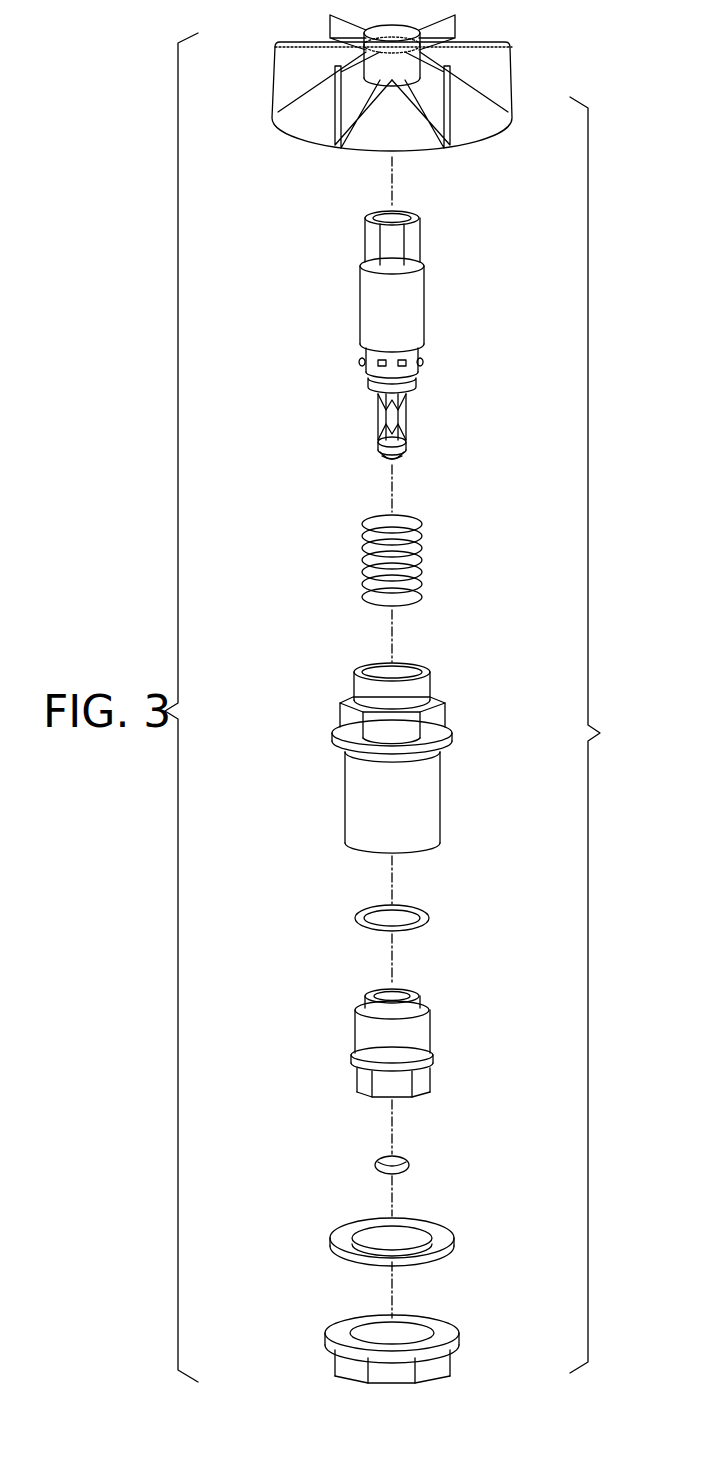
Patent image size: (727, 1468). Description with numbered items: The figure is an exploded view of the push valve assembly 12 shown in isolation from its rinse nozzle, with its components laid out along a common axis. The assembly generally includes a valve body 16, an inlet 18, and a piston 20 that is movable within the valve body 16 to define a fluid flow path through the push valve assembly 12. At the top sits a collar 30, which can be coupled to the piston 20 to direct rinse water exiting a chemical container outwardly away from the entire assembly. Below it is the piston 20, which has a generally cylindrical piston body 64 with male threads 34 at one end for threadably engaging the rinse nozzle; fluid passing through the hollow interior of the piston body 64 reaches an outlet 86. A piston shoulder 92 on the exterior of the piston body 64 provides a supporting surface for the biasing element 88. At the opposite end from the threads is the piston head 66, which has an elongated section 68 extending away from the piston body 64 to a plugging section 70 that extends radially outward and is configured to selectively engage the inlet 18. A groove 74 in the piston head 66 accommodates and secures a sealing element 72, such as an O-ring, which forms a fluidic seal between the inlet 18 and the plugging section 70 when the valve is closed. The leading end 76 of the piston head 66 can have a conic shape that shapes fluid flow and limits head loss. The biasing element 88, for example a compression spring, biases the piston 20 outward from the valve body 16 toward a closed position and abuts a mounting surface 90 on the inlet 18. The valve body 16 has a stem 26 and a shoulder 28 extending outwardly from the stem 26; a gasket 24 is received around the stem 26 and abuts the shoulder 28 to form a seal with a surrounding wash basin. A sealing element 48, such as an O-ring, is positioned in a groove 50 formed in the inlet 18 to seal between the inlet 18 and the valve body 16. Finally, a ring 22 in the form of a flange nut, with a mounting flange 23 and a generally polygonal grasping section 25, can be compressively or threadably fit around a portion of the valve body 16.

The push valve assembly 12 is at (399, 703).
The collar 30 is at (300, 123).
The outlet 86 is at (381, 215).
The male threads 34 is at (422, 243).
The piston 20 is at (404, 338).
The piston body 64 is at (425, 318).
The piston shoulder 92 is at (418, 360).
The elongated section 68 is at (383, 410).
The plugging section 70 is at (382, 448).
The groove 74 is at (402, 450).
The leading end 76 is at (388, 458).
The piston head 66 is at (405, 454).
The biasing element 88 is at (368, 560).
The shoulder 28 is at (452, 735).
The valve body 16 is at (398, 758).
The stem 26 is at (440, 790).
The sealing element 48 is at (363, 922).
The mounting surface 90 is at (420, 1002).
The groove 50 is at (357, 1058).
The inlet 18 is at (395, 1038).
The sealing element 72 is at (380, 1168).
The gasket 24 is at (340, 1252).
The mounting flange 23 is at (445, 1325).
The ring 22 is at (402, 1343).
The grasping section 25 is at (445, 1365).